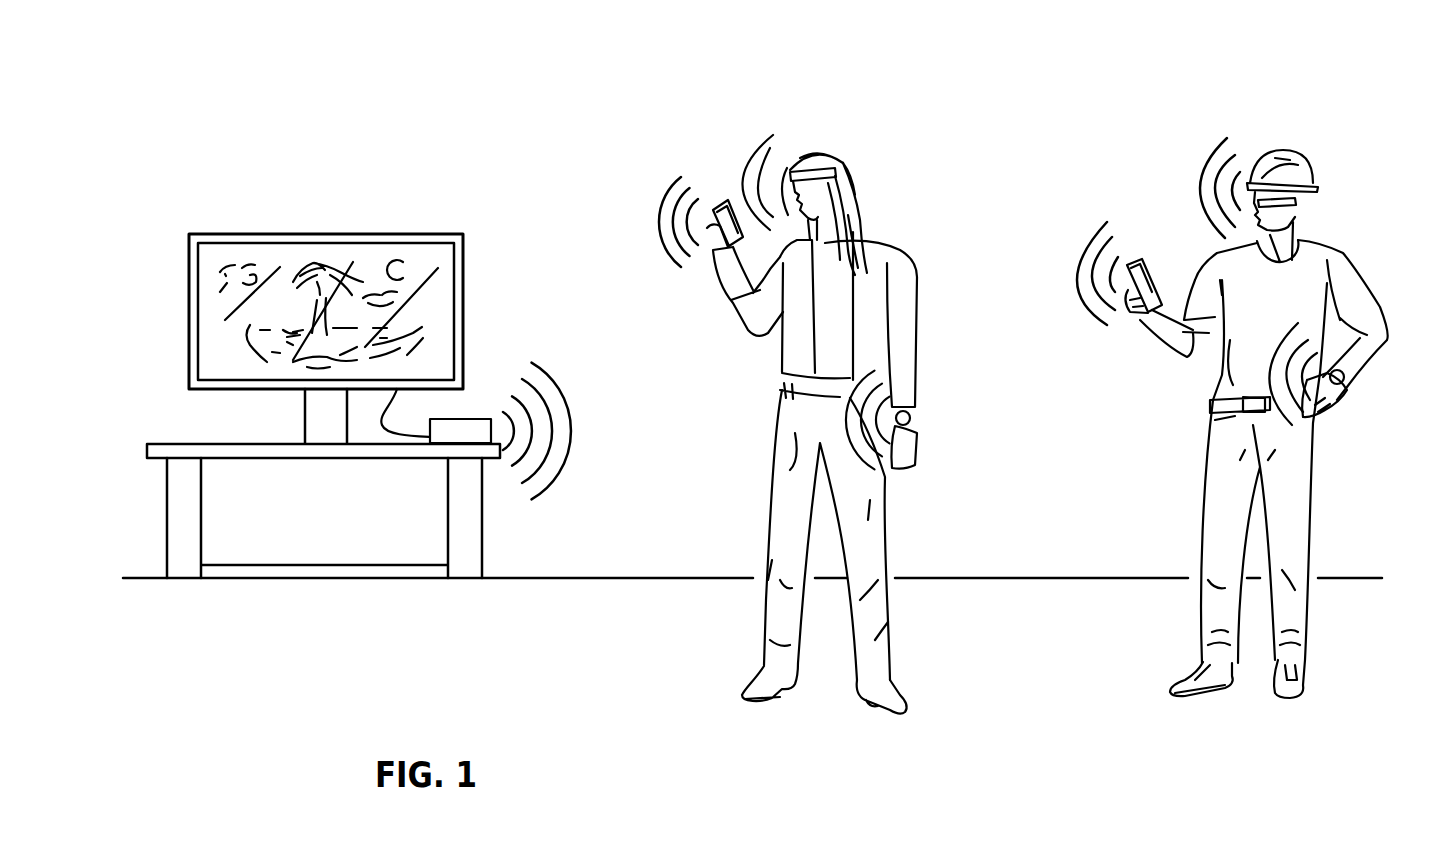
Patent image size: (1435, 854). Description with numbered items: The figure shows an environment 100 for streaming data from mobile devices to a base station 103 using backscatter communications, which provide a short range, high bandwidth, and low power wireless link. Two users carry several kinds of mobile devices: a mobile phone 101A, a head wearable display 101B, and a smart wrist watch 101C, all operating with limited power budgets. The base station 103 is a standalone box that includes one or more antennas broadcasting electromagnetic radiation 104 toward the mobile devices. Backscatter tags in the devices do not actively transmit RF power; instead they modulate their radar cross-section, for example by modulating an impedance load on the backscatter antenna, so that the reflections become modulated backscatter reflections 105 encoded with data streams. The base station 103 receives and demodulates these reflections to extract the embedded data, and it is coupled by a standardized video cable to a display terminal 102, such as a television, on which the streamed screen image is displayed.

The environment 100 is at (265, 123).
The mobile phone 101A is at (718, 190).
The head wearable display 101B is at (827, 168).
The smart wrist watch 101C is at (922, 410).
The display terminal 102 is at (397, 234).
The base station 103 is at (476, 441).
The electromagnetic radiation 104 is at (543, 490).
The modulated backscatter reflections 105 is at (665, 190).